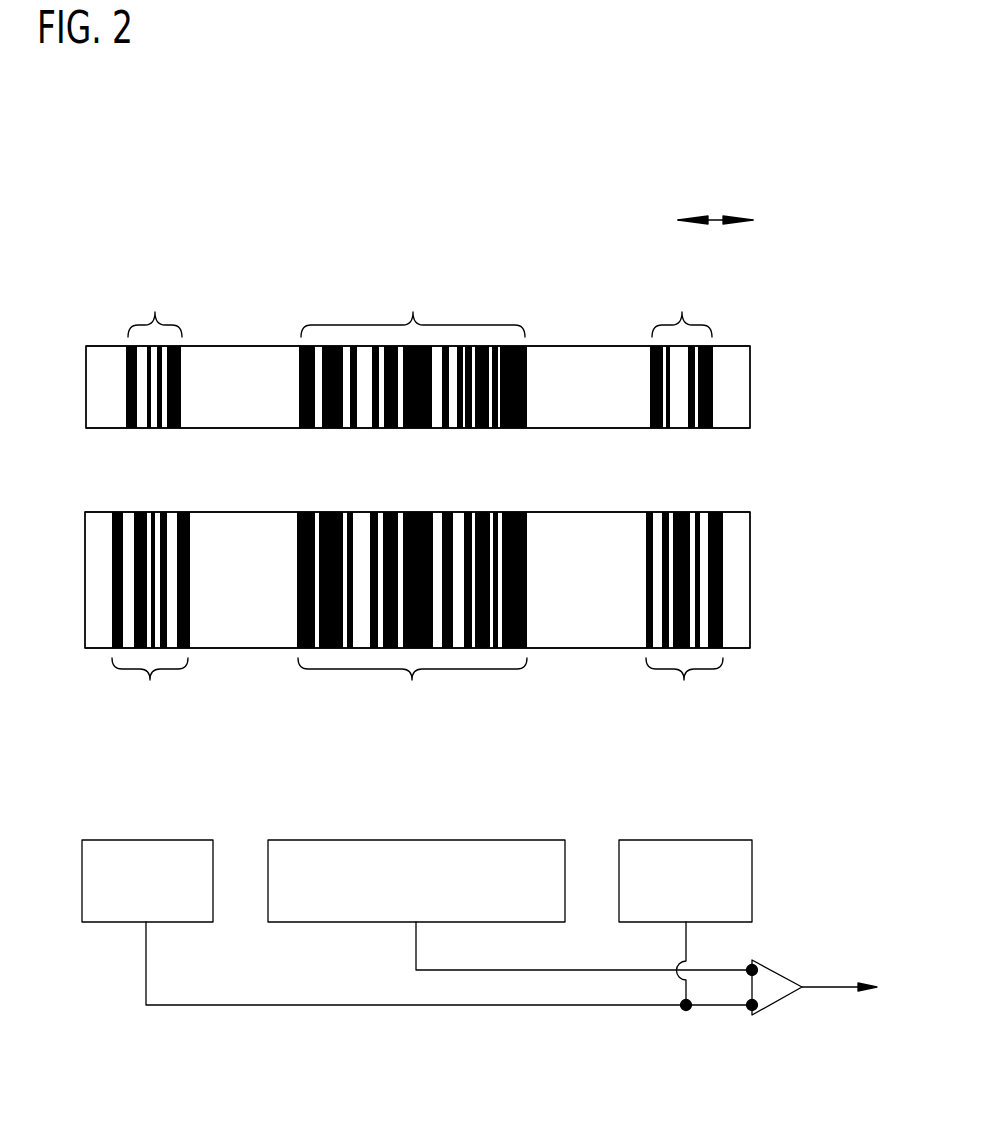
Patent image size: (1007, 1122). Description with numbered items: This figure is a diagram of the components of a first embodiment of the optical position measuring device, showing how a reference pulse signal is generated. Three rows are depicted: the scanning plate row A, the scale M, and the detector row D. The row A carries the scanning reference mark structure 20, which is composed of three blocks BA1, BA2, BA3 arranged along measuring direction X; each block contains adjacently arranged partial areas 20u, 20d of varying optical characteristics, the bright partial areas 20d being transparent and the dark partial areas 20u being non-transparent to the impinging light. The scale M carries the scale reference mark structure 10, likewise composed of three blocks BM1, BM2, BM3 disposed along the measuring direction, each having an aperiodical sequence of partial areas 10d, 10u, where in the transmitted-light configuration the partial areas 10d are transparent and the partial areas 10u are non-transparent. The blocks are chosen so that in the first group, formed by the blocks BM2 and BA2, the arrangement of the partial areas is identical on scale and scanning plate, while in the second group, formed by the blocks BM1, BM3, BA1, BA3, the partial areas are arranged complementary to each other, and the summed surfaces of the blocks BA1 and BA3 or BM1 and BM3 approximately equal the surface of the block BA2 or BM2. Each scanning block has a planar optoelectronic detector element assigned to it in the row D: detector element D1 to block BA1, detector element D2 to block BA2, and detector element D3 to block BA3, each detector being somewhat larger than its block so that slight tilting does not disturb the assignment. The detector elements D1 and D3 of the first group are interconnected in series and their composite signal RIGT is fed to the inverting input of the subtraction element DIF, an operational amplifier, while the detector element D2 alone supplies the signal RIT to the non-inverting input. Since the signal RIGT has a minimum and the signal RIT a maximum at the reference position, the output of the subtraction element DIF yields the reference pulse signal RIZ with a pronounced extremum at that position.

The scanning reference mark structure 20 is at (782, 377).
The bright partial area of scanning reference mark structure 20d is at (143, 367).
The dark partial area of scanning reference mark structure 20u is at (127, 387).
The scale reference mark structure 10 is at (787, 574).
The bright partial area of scale reference mark structure 10d is at (723, 533).
The dark partial area of scale reference mark structure 10u is at (723, 622).
The first block of scanning reference mark structure BA1 is at (157, 340).
The second block of scanning reference mark structure BA2 is at (413, 335).
The third block of scanning reference mark structure BA3 is at (685, 338).
The first block of scale reference mark structure BM1 is at (151, 625).
The second block of scale reference mark structure BM2 is at (412, 625).
The third block of scale reference mark structure BM3 is at (687, 625).
The scanning plate row A is at (391, 387).
The scale M is at (390, 580).
The detector row D is at (32, 871).
The first detector element D1 is at (105, 910).
The second detector element D2 is at (402, 868).
The third detector element D3 is at (737, 882).
The measuring direction X is at (715, 194).
The composite signal of first group RIGT is at (449, 963).
The signal of second group RIT is at (584, 946).
The reference pulse signal RIZ is at (839, 961).
The subtraction element DIF is at (740, 1012).